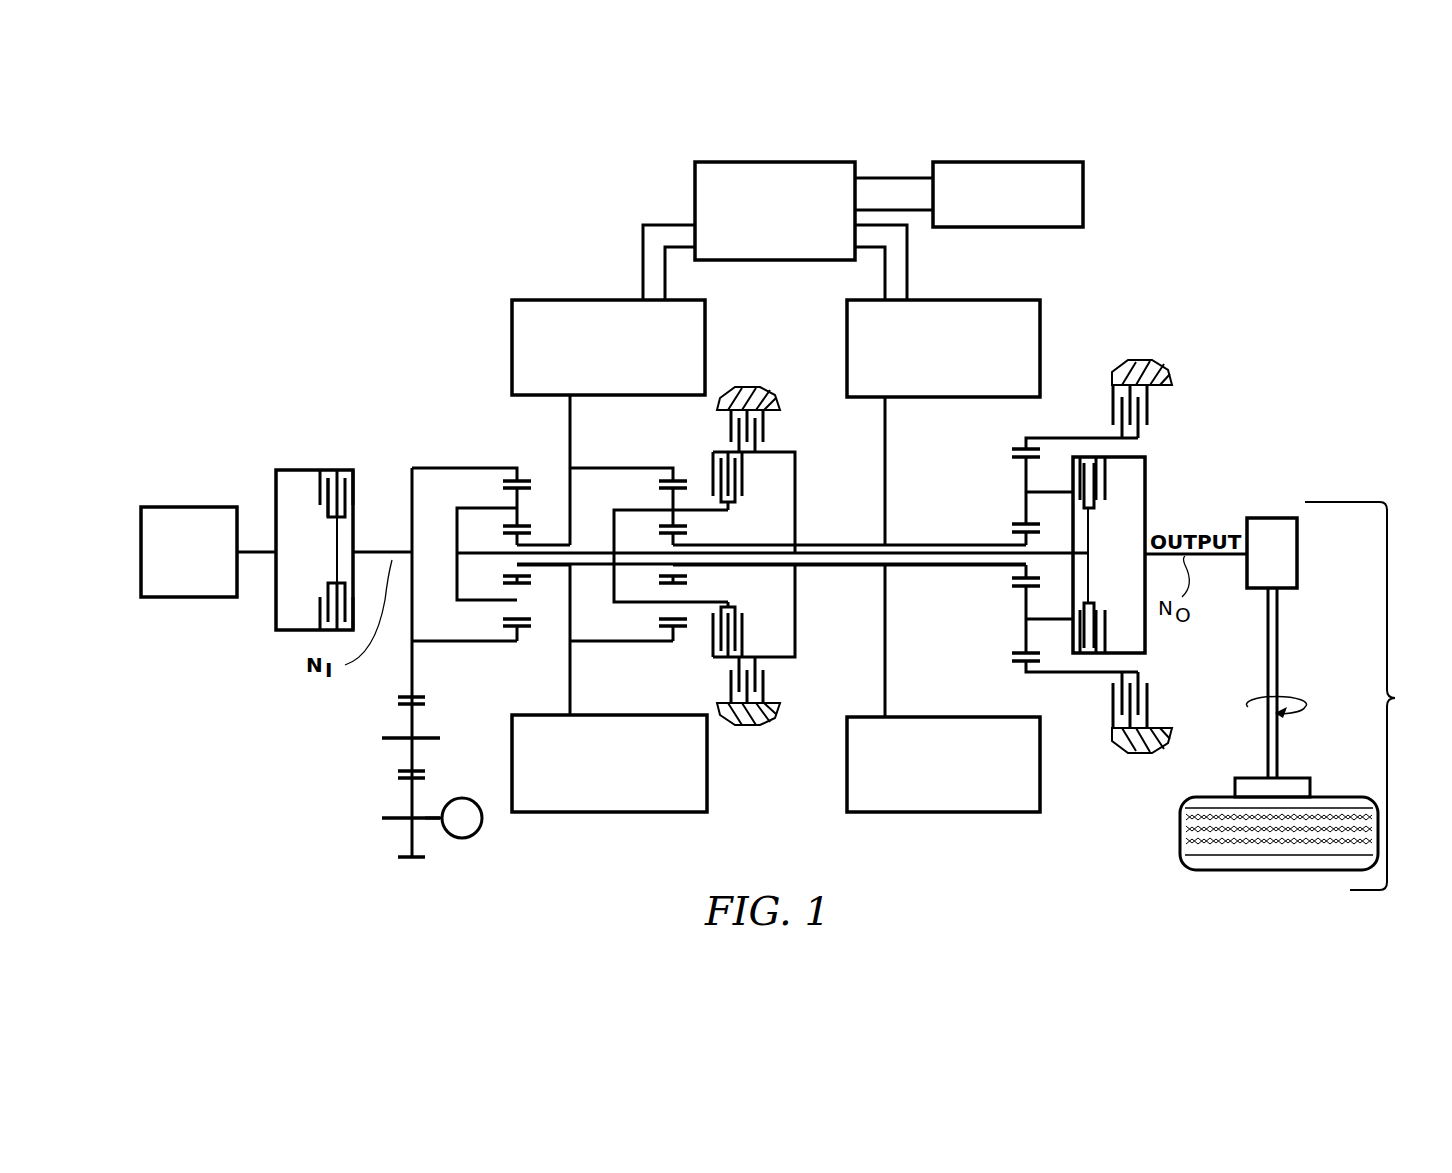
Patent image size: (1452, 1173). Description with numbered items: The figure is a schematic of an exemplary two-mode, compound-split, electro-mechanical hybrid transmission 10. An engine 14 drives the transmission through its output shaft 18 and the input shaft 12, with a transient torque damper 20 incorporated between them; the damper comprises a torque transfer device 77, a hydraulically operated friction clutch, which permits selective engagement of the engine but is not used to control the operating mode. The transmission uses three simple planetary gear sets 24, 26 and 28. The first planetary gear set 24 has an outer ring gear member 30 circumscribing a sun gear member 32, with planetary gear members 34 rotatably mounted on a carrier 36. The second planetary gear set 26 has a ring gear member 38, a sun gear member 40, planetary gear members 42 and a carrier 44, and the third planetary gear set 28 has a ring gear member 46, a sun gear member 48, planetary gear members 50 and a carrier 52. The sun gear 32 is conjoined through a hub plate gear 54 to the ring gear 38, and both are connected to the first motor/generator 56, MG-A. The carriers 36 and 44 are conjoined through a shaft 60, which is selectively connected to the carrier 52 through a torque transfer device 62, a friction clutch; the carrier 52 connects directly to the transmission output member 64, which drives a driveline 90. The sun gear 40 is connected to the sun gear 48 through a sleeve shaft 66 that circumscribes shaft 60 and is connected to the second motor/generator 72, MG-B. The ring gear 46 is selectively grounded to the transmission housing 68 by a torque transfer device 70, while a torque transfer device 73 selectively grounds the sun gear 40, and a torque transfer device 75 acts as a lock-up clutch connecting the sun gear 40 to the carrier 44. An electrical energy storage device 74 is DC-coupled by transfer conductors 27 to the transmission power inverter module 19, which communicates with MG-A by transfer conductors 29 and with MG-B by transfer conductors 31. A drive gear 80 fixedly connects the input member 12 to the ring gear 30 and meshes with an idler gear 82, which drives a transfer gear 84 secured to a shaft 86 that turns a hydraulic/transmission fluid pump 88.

The transmission 10 is at (470, 260).
The input shaft 12 is at (396, 548).
The engine 14 is at (193, 505).
The output shaft of the engine 18 is at (260, 548).
The transmission power inverter module 19 is at (693, 180).
The transient torque damper 20 is at (339, 462).
The first planetary gear set 24 is at (508, 462).
The second planetary gear set 26 is at (670, 462).
The transfer conductors 27 is at (893, 176).
The third planetary gear set 28 is at (1016, 440).
The transfer conductors 29 is at (641, 262).
The outer ring gear member 30 is at (527, 478).
The transfer conductors 31 is at (909, 258).
The inner sun gear member 32 is at (522, 537).
The planetary gear members 34 is at (512, 500).
The carrier 36 is at (455, 578).
The outer ring gear member 38 is at (680, 478).
The inner sun gear member 40 is at (682, 545).
The planetary gear members 42 is at (670, 498).
The carrier 44 is at (612, 592).
The outer ring gear member 46 is at (1010, 448).
The inner sun gear member 48 is at (1012, 542).
The planetary gear members 50 is at (1020, 468).
The carrier 52 is at (1150, 466).
The hub plate gear 54 is at (572, 524).
The motor/generator 56 is at (510, 330).
The shaft 60 is at (860, 551).
The torque transfer device 62 is at (1110, 486).
The transmission output member 64 is at (1222, 545).
The sleeve shaft 66 is at (832, 544).
The transmission housing 68 is at (745, 390).
The torque transfer device 70 is at (1104, 405).
The motor/generator 72 is at (1042, 318).
The torque transfer device 73 is at (770, 434).
The electrical energy storage device 74 is at (1085, 182).
The torque transfer device 75 is at (753, 482).
The torque transfer device 77 is at (314, 503).
The drive gear 80 is at (410, 630).
The idler gear 82 is at (405, 728).
The transfer gear 84 is at (405, 836).
The shaft 86 is at (428, 826).
The hydraulic/transmission fluid pump 88 is at (475, 838).
The driveline 90 is at (1397, 698).